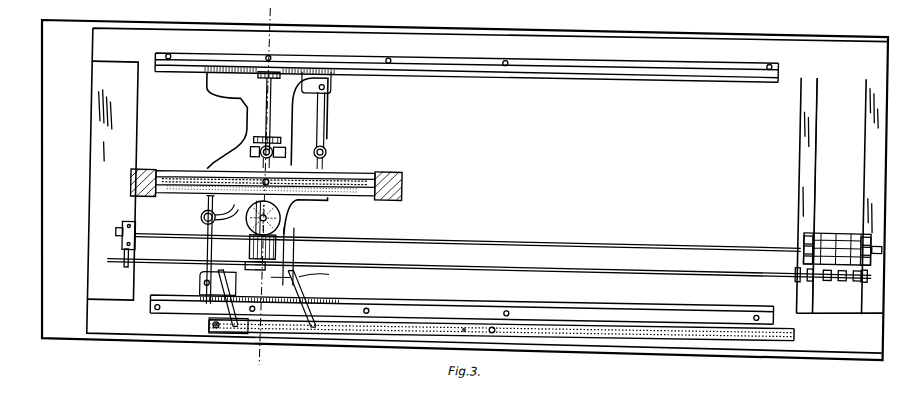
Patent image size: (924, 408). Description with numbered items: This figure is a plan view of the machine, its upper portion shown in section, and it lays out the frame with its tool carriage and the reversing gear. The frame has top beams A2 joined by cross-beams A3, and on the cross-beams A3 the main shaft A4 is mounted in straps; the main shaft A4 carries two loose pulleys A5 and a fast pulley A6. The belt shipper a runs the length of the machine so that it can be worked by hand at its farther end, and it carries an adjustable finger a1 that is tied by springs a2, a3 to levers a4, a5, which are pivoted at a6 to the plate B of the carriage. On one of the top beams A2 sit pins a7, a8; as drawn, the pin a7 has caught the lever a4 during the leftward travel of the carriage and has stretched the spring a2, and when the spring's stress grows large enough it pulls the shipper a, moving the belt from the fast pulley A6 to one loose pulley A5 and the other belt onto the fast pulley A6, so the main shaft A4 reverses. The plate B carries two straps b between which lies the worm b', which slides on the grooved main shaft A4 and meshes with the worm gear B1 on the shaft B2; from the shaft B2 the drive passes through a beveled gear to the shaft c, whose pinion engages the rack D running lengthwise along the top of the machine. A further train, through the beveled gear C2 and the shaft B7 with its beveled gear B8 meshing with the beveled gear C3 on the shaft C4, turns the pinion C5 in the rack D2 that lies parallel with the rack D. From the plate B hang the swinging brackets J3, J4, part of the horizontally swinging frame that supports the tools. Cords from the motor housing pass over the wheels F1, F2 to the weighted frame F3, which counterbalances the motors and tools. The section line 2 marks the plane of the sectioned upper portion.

The cross-beams A3 is at (895, 176).
The top beams A2 is at (846, 312).
The main shaft A4 is at (756, 232).
The loose pulleys A5 is at (828, 216).
The fast pulley A6 is at (838, 185).
The belt shipper a is at (489, 263).
The adjustable finger a1 is at (225, 284).
The spring a2 is at (218, 278).
The spring a3 is at (335, 282).
The lever a4 is at (212, 285).
The lever a5 is at (335, 291).
The pivot a6 is at (215, 305).
The pin a7 is at (248, 325).
The pin a8 is at (480, 323).
The section line 2 is at (262, 190).
The plate B is at (247, 96).
The worm gear B1 is at (340, 208).
The shaft B2 is at (241, 218).
The shaft B7 is at (322, 106).
The beveled gear B8 is at (255, 146).
The straps b is at (265, 235).
The worm b' is at (305, 247).
The beveled gear C2 is at (283, 326).
The beveled gear C3 is at (258, 133).
The shaft C4 is at (273, 96).
The pinion C5 is at (276, 60).
The shaft c is at (280, 286).
The rack D is at (306, 325).
The rack D2 is at (318, 64).
The wheel F1 is at (170, 171).
The wheel F2 is at (350, 172).
The weighted frame F3 is at (400, 193).
The swinging bracket J3 is at (328, 118).
The swinging bracket J4 is at (212, 248).